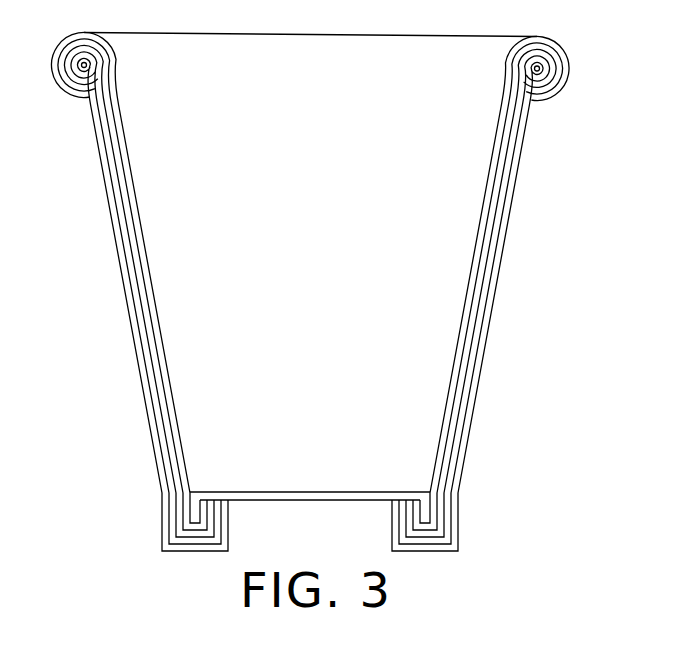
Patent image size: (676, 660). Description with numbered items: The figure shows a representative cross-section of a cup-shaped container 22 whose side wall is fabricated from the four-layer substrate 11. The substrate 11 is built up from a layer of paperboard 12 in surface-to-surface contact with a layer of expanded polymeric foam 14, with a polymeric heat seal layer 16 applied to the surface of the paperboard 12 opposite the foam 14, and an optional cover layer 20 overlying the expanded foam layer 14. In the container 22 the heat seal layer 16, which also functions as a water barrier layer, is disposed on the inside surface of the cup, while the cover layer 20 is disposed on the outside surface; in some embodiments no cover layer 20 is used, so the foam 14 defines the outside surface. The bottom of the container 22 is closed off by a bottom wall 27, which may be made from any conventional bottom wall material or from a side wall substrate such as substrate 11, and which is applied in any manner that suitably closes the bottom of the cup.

The substrate 11 is at (499, 284).
The paperboard layer 12 is at (500, 138).
The expanded polymeric foam layer 14 is at (508, 161).
The polymeric heat seal layer 16 is at (466, 357).
The cover layer 20 is at (503, 240).
The cup-shaped container 22 is at (542, 195).
The bottom wall 27 is at (281, 501).